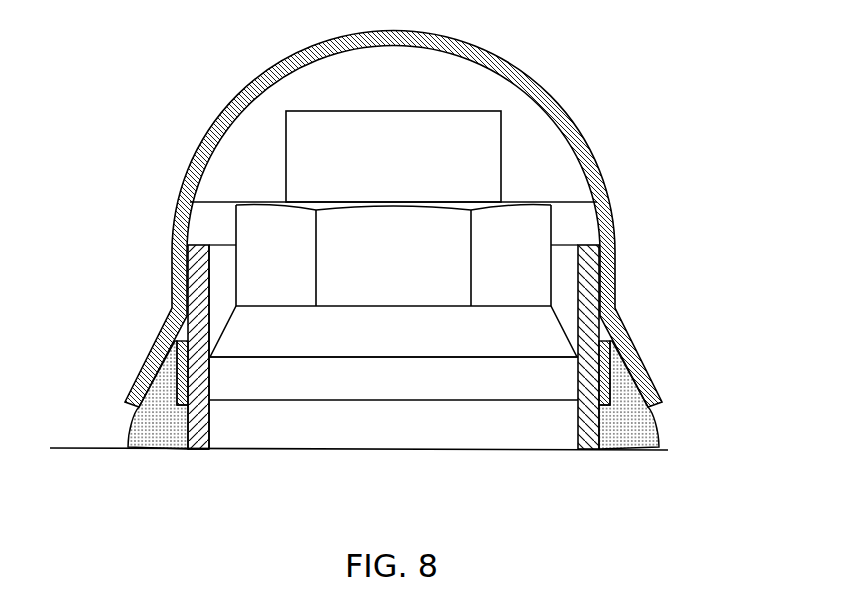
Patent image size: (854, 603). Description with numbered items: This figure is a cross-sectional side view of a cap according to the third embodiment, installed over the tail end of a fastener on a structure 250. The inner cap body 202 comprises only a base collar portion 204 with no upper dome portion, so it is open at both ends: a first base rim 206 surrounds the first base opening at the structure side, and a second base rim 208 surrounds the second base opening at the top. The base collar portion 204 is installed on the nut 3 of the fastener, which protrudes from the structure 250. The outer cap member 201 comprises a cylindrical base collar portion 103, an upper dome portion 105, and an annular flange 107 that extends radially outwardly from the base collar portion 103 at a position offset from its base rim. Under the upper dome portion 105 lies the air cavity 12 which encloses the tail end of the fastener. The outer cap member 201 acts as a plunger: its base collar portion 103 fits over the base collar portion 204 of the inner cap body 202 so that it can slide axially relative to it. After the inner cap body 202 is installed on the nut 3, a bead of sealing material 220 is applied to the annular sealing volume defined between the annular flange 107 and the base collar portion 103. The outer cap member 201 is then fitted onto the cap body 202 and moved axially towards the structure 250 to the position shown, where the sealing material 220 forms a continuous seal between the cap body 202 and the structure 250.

The outer cap member 201 is at (393, 217).
The upper dome portion 105 is at (247, 85).
The cylindrical base collar portion 103 is at (618, 277).
The annular flange 107 is at (133, 372).
The air cavity 12 is at (413, 101).
The second base rim 208 is at (202, 243).
The cap body 202 is at (214, 391).
The base collar portion 204 is at (210, 417).
The first base rim 206 is at (201, 452).
The structure 250 is at (92, 447).
The sealing material 220 is at (653, 430).
The nut 3 is at (483, 392).